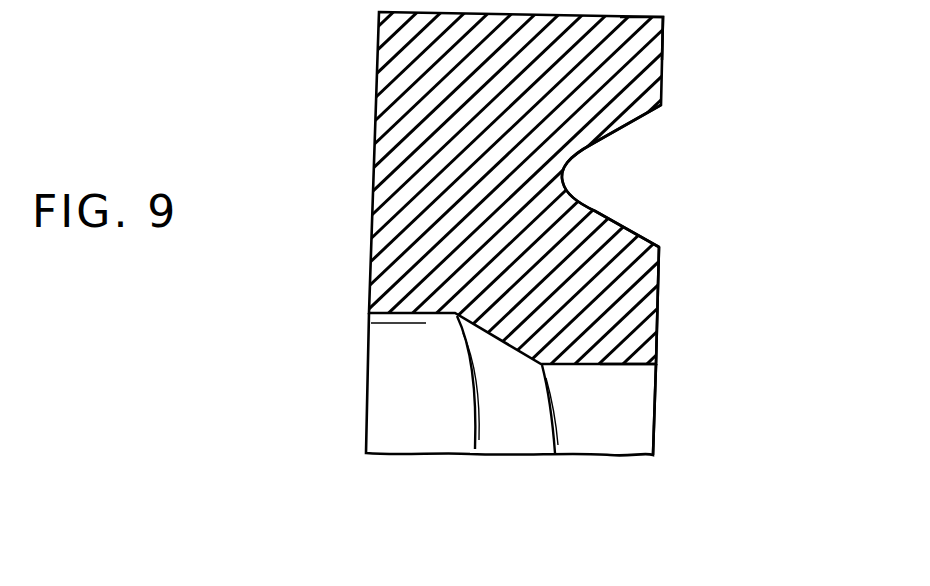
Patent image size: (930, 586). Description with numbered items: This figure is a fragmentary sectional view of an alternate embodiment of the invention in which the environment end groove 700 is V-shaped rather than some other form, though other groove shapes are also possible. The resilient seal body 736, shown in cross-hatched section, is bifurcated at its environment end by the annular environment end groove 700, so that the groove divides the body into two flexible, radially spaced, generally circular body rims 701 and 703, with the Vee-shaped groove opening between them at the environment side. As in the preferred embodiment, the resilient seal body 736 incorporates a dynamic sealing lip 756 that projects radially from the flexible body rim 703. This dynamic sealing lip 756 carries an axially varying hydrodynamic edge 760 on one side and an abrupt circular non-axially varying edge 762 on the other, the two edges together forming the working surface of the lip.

The resilient seal body 736 is at (440, 118).
The flexible body rim 701 is at (617, 65).
The environment end groove 700 is at (640, 178).
The flexible body rim 703 is at (627, 307).
The hydrodynamic edge 760 is at (475, 347).
The dynamic sealing lip 756 is at (591, 342).
The non-axially varying edge 762 is at (657, 368).